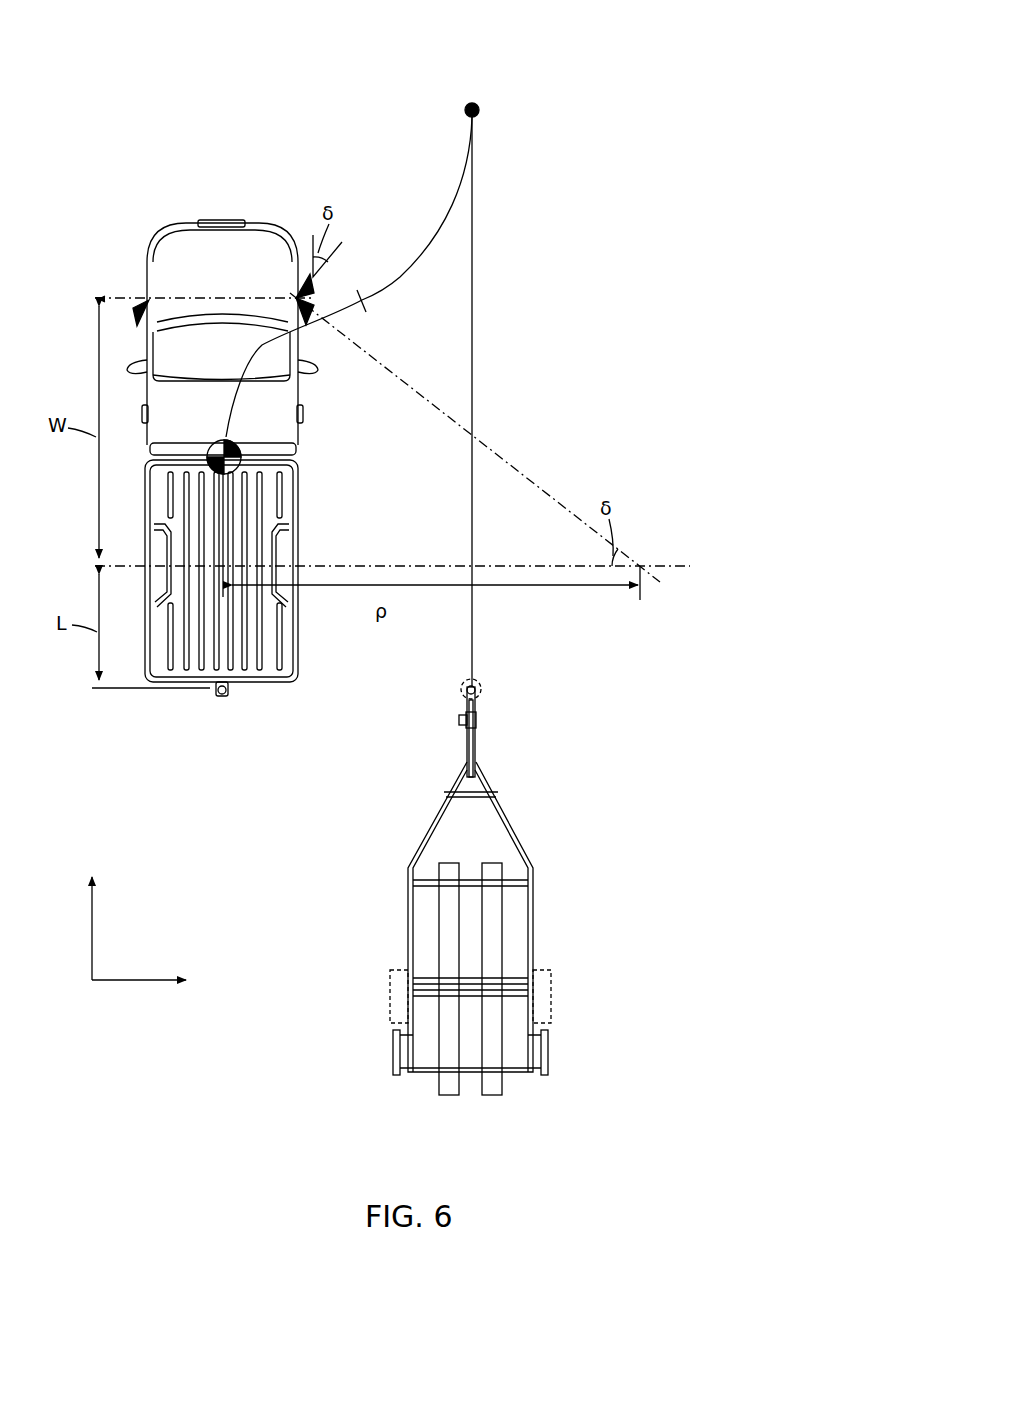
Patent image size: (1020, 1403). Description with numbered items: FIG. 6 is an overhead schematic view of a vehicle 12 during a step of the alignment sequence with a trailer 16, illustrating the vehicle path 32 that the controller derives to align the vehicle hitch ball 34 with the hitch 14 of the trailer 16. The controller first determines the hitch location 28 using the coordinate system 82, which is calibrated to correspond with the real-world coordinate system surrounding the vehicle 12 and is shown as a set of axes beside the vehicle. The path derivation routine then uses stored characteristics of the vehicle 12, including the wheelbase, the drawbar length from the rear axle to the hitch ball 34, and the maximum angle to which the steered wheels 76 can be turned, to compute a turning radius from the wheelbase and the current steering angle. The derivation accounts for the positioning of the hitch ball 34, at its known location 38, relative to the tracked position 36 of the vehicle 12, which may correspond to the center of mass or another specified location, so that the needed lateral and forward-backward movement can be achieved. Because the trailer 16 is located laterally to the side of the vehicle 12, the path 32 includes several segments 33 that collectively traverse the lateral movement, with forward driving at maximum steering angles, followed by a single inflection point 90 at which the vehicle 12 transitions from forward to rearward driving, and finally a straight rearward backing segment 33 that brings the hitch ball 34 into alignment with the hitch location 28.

The vehicle path 32 is at (556, 62).
The inflection point 90 is at (467, 103).
The segments 33 is at (478, 322).
The vehicle 12 is at (122, 222).
The steered wheels 76 is at (302, 272).
The tracked position of the vehicle 36 is at (210, 462).
The hitch ball 34 is at (217, 694).
The known location of the vehicle hitch ball 38 is at (232, 693).
The hitch location 28 is at (482, 682).
The hitch 14 is at (478, 692).
The trailer 16 is at (406, 916).
The coordinate system 82 is at (127, 998).